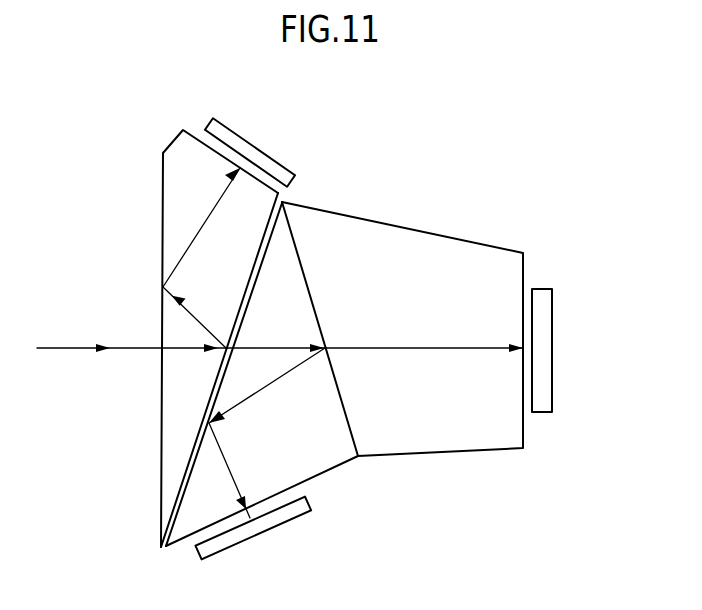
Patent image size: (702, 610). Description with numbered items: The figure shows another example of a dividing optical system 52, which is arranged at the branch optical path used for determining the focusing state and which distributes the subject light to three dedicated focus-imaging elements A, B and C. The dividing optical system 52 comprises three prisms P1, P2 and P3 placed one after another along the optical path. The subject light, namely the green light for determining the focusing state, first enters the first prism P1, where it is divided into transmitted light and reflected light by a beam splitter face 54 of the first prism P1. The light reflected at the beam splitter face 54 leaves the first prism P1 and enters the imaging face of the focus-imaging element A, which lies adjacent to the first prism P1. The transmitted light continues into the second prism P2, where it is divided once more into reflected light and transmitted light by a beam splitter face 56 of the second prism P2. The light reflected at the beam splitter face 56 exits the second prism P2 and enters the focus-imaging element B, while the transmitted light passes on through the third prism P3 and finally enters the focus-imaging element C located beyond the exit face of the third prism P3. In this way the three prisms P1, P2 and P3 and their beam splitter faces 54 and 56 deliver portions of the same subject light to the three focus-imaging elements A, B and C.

The dividing optical system 52 is at (277, 340).
The beam splitter face 54 is at (245, 290).
The beam splitter face 56 is at (317, 318).
The first prism P1 is at (188, 215).
The second prism P2 is at (310, 450).
The third prism P3 is at (422, 268).
The focus-imaging element A is at (543, 347).
The focus-imaging element B is at (268, 525).
The focus-imaging element C is at (257, 155).